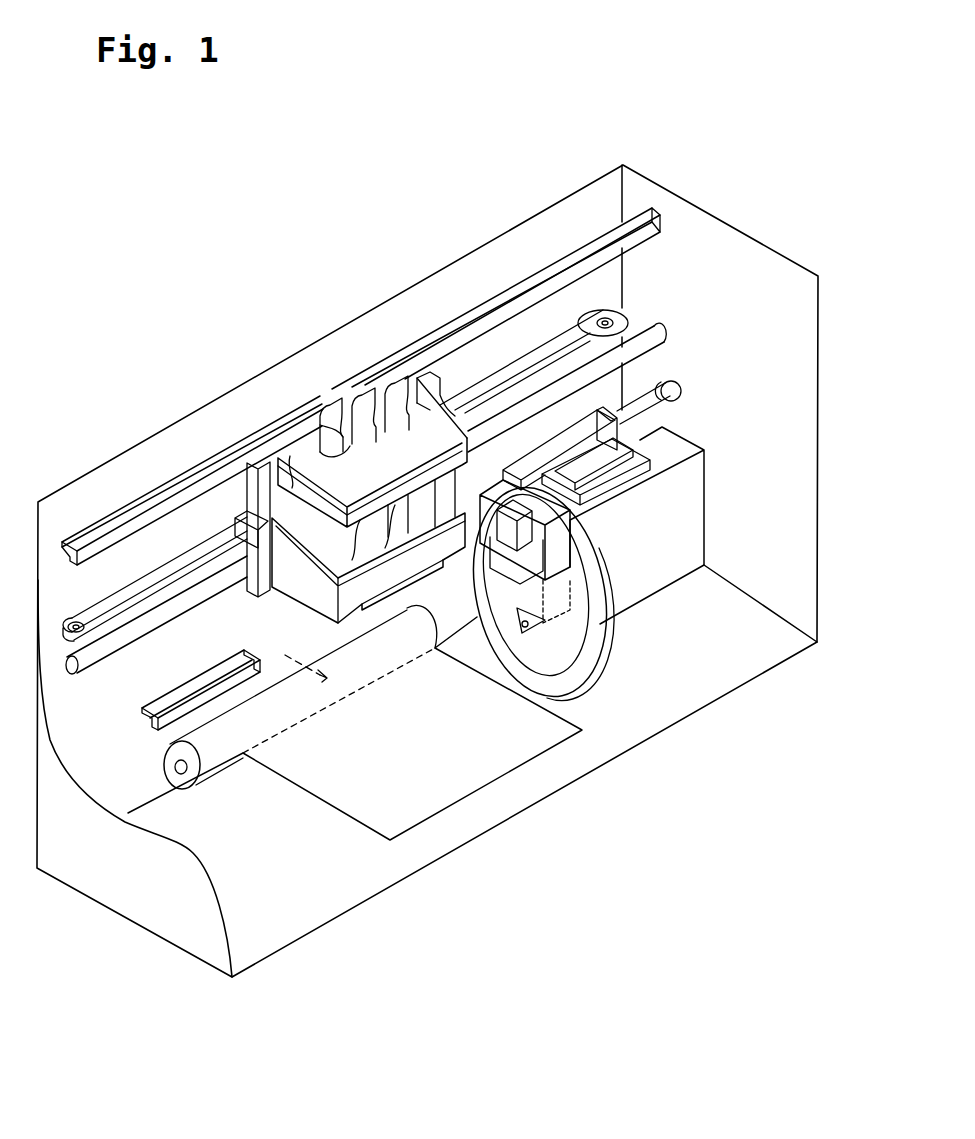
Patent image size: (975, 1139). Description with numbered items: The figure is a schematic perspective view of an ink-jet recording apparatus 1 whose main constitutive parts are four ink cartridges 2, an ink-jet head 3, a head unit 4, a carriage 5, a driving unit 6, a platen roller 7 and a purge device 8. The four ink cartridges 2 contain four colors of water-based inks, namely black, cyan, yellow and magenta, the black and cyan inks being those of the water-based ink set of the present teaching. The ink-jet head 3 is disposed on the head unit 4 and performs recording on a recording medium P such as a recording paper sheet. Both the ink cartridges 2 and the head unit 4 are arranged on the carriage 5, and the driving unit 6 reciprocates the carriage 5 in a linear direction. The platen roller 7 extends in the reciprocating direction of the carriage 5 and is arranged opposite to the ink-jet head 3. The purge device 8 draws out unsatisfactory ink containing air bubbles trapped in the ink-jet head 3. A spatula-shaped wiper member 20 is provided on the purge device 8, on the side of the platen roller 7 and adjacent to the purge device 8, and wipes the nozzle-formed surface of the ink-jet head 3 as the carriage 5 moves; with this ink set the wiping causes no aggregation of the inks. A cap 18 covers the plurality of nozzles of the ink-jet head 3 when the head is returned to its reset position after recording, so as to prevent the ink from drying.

The ink-jet recording apparatus 1 is at (329, 182).
The ink cartridges 2 is at (382, 426).
The ink-jet head 3 is at (418, 585).
The head unit 4 is at (297, 608).
The carriage 5 is at (254, 480).
The driving unit 6 is at (647, 192).
The platen roller 7 is at (215, 758).
The purge device 8 is at (760, 551).
The cap 18 is at (567, 440).
The wiper member 20 is at (513, 532).
The recording medium P is at (375, 816).